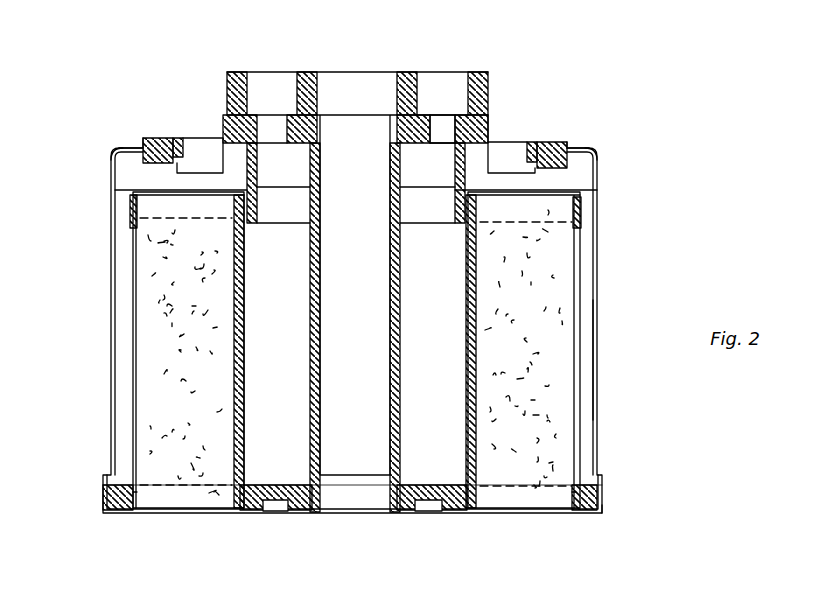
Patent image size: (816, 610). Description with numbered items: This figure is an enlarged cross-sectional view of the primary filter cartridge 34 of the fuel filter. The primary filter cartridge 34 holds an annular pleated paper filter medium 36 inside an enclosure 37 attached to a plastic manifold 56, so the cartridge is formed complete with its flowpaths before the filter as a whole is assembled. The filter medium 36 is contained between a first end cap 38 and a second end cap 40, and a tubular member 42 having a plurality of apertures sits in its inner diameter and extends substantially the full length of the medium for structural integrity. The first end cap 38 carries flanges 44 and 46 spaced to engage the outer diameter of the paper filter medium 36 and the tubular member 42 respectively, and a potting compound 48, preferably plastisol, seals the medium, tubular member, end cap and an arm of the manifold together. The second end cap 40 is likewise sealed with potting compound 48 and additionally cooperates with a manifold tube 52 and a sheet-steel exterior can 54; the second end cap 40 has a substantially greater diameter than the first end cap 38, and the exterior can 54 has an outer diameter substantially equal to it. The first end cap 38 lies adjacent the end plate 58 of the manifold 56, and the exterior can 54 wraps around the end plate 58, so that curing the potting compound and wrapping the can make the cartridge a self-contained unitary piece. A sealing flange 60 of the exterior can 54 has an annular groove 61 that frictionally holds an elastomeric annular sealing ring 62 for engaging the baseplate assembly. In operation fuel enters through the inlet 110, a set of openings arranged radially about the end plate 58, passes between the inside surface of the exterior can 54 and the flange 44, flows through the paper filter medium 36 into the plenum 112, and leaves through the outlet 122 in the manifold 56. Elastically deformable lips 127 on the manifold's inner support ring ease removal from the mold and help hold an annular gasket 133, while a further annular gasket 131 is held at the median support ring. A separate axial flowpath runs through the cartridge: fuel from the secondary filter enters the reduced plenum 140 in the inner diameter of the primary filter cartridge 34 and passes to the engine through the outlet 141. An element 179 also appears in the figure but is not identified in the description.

The primary filter cartridge 34 is at (618, 515).
The paper filter medium 36 is at (157, 400).
The enclosure 37 is at (615, 249).
The first end cap 38 is at (147, 192).
The second end cap 40 is at (145, 513).
The tubular member 42 is at (238, 420).
The flange 44 is at (132, 215).
The flange 46 is at (250, 225).
The potting compound 48 is at (297, 512).
The manifold tube 52 is at (390, 307).
The exterior can 54 is at (112, 310).
The manifold 56 is at (212, 110).
The end plate 58 is at (183, 165).
The sealing flange 60 is at (118, 148).
The annular groove 61 is at (541, 142).
The annular sealing ring 62 is at (137, 142).
The inlet 110 is at (200, 140).
The plenum 112 is at (423, 355).
The outlet 122 is at (440, 120).
The elastically deformable lips 127 is at (320, 132).
The annular gasket 131 is at (232, 72).
The annular gasket 133 is at (398, 93).
The reduced plenum 140 is at (375, 259).
The outlet 141 is at (355, 128).
The shoulder 179 is at (503, 130).